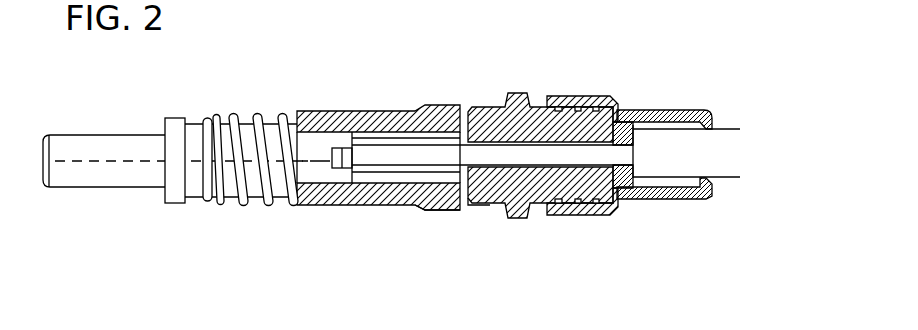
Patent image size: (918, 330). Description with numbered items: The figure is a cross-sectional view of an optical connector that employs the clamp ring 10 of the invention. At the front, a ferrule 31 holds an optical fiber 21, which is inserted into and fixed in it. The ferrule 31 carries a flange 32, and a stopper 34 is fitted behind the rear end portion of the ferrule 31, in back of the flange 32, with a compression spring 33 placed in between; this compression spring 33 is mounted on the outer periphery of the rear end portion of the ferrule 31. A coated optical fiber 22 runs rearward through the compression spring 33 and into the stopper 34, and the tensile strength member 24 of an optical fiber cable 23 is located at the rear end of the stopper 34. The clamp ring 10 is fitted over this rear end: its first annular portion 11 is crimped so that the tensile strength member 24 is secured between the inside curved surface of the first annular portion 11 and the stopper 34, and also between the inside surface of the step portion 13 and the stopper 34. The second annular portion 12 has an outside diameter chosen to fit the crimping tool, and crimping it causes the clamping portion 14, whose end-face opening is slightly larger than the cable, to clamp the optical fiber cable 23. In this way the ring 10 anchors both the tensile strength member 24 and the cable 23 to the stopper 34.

The clamp ring 10 is at (675, 93).
The first annular portion 11 is at (550, 213).
The second annular portion 12 is at (676, 199).
The step portion 13 is at (617, 216).
The clamping portion 14 is at (717, 110).
The optical fiber 21 is at (73, 160).
The coated optical fiber 22 is at (375, 160).
The optical fiber cable 23 is at (697, 165).
The tensile strength member 24 is at (630, 189).
The ferrule 31 is at (82, 188).
The flange 32 is at (172, 204).
The compression spring 33 is at (240, 202).
The stopper 34 is at (428, 209).